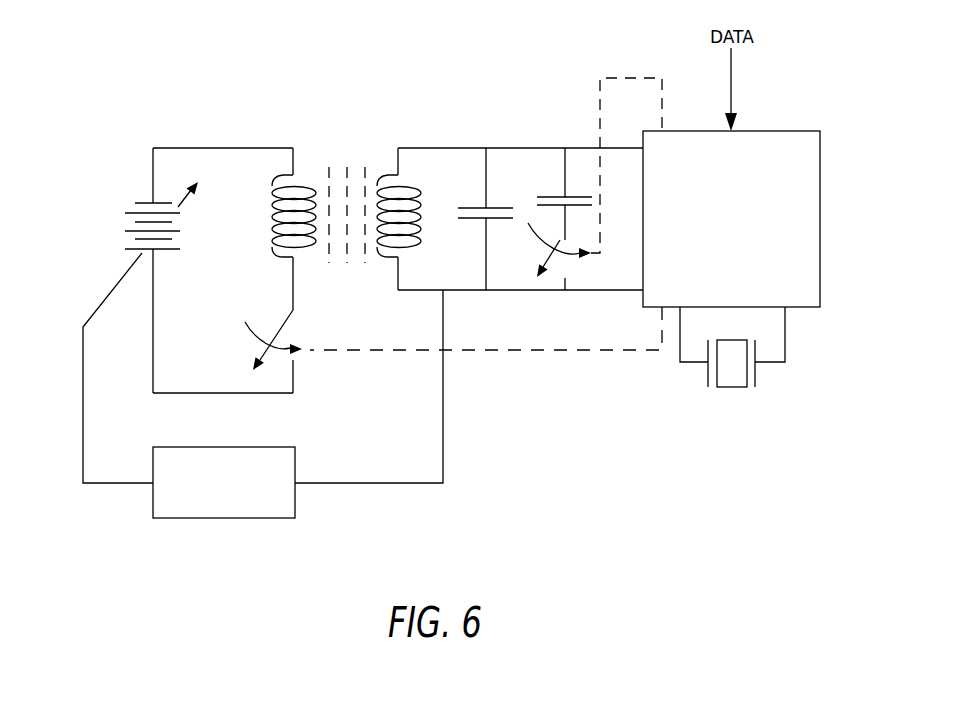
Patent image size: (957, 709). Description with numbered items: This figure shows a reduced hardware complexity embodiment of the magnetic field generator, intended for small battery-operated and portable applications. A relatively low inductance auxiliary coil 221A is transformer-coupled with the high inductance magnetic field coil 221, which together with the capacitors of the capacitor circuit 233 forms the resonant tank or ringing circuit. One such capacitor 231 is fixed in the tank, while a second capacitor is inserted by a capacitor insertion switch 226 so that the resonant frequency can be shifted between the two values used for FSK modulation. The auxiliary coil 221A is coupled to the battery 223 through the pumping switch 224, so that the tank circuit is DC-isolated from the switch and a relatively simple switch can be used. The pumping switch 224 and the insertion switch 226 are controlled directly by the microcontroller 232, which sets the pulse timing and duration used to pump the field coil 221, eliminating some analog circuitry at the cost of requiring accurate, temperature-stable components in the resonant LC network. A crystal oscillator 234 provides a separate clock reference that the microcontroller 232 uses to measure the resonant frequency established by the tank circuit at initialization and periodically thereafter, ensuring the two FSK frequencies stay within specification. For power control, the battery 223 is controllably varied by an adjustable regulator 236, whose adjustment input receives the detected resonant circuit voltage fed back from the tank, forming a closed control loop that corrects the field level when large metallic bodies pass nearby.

The magnetic field coil 221 is at (416, 188).
The auxiliary coil 221A is at (272, 232).
The battery 223 is at (127, 220).
The pumping switch 224 is at (263, 344).
The capacitor insertion switch 226 is at (560, 257).
The capacitor 231 is at (485, 223).
The microcontroller 232 is at (820, 227).
The capacitor circuit 233 is at (513, 172).
The crystal oscillator 234 is at (731, 387).
The adjustable regulator 236 is at (225, 518).